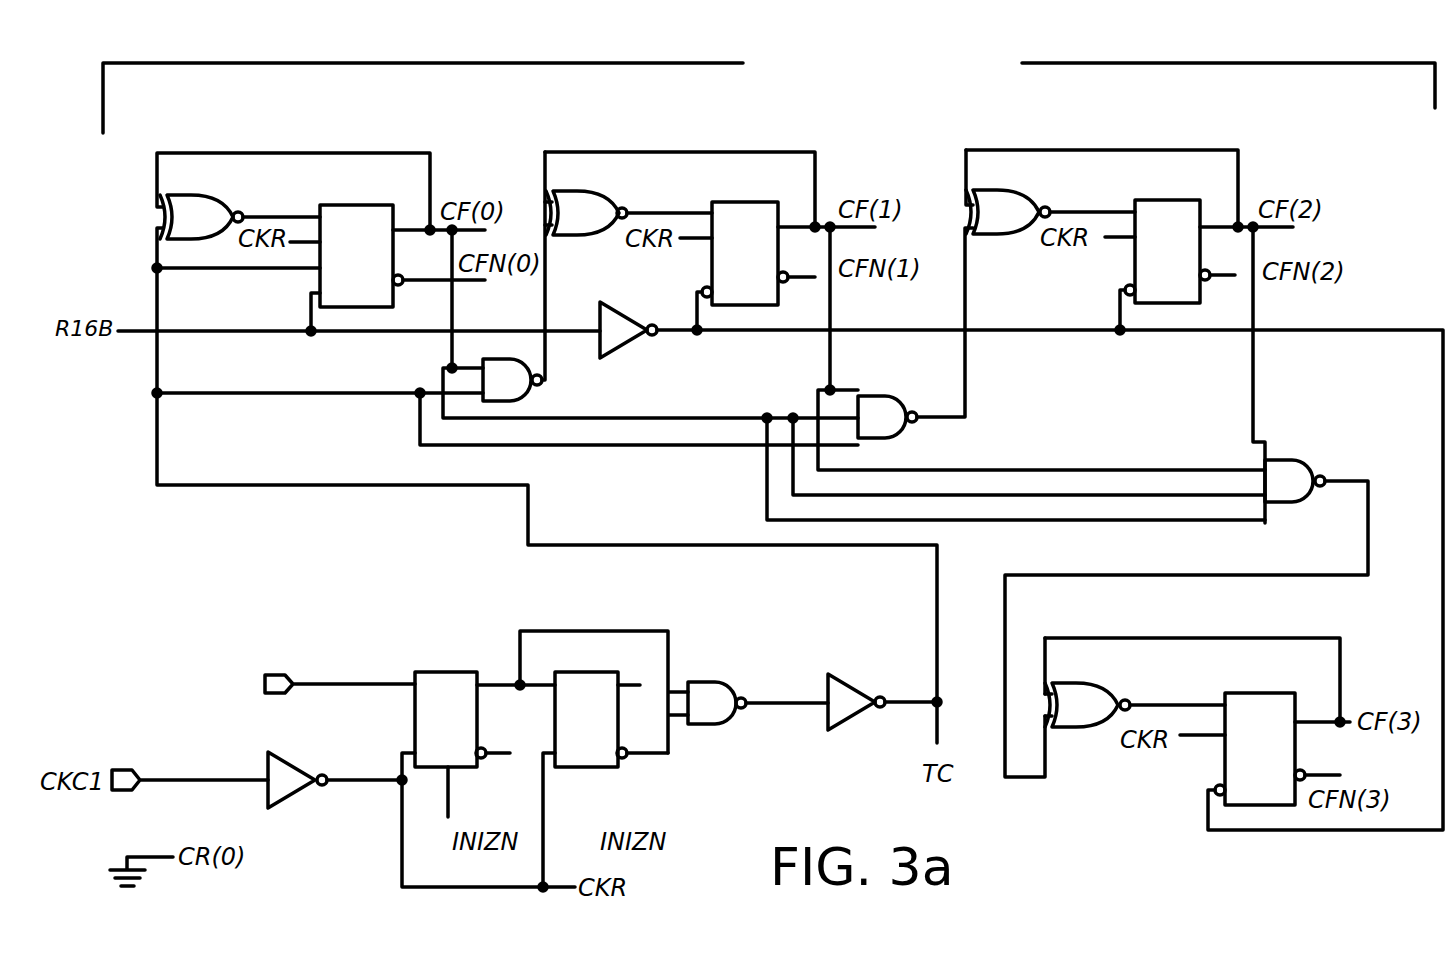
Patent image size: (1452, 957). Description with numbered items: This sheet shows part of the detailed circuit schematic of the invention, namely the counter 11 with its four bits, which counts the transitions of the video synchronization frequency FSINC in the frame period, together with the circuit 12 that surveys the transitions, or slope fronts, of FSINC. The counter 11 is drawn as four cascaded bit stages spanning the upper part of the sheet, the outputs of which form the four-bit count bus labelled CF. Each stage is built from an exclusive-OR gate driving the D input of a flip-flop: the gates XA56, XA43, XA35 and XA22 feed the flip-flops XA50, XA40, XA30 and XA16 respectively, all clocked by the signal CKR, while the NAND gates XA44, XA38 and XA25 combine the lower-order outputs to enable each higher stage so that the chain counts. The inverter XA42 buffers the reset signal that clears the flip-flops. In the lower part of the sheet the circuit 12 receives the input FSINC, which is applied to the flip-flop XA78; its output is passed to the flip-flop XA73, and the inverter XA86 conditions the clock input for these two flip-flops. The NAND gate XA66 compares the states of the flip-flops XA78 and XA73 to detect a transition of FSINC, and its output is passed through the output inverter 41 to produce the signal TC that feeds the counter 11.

The counter 11 is at (769, 91).
The circuit 12 is at (289, 660).
The B41 inverter (XA60) 41 is at (882, 694).
The exclusive-OR gate XA56 is at (240, 206).
The flip-flop XA50 is at (360, 241).
The NAND gate XA44 is at (506, 276).
The exclusive-OR gate XA43 is at (629, 202).
The flip-flop XA40 is at (746, 239).
The inverter XA42 is at (637, 318).
The NAND gate XA38 is at (915, 294).
The exclusive-OR gate XA35 is at (1050, 201).
The flip-flop XA30 is at (1170, 237).
The NAND gate XA25 is at (1186, 603).
The exclusive-OR gate XA22 is at (1135, 690).
The flip-flop XA16 is at (1261, 734).
The flip-flop XA78 is at (451, 706).
The flip-flop XA73 is at (591, 706).
The NAND gate XA66 is at (758, 682).
The inverter XA86 is at (335, 777).